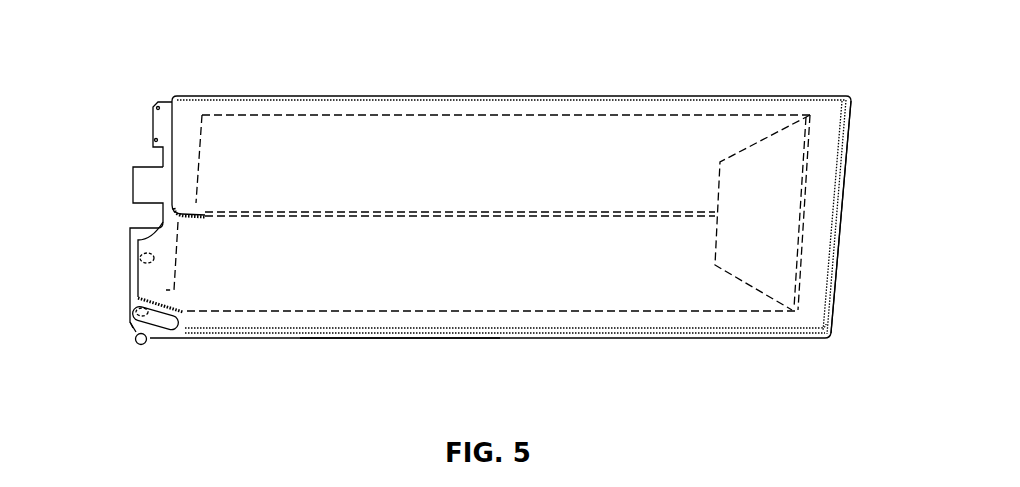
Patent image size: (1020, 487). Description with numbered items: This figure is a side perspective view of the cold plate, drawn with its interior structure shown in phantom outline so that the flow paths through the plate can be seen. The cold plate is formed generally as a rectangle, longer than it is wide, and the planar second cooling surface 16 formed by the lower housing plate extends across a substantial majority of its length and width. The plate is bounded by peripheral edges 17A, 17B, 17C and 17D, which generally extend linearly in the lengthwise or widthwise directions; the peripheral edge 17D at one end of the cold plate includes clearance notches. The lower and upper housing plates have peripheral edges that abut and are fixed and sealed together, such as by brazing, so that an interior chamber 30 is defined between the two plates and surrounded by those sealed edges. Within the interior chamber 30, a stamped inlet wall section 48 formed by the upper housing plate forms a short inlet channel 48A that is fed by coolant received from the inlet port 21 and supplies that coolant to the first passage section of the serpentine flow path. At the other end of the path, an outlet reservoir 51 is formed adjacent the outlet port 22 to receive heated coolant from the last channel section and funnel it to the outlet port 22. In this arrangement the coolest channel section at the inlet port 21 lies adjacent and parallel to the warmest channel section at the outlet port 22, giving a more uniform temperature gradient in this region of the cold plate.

The second cooling surface 16 is at (564, 130).
The peripheral edge 17A is at (413, 339).
The peripheral edge 17B is at (840, 290).
The peripheral edge 17C is at (173, 98).
The peripheral edge 17D is at (132, 183).
The interior chamber 30 is at (645, 138).
The outlet port 22 is at (127, 265).
The outlet reservoir 51 is at (147, 282).
The inlet wall section 48 is at (167, 317).
The inlet channel 48A is at (130, 330).
The inlet port 21 is at (143, 341).